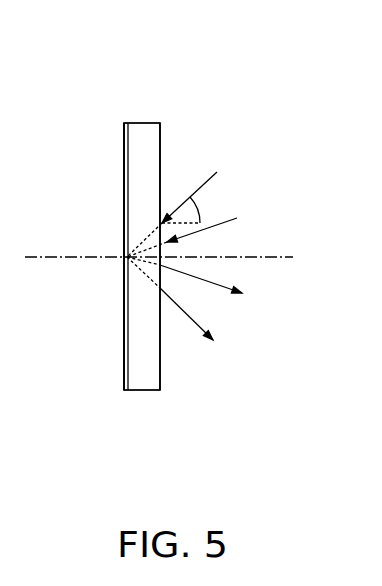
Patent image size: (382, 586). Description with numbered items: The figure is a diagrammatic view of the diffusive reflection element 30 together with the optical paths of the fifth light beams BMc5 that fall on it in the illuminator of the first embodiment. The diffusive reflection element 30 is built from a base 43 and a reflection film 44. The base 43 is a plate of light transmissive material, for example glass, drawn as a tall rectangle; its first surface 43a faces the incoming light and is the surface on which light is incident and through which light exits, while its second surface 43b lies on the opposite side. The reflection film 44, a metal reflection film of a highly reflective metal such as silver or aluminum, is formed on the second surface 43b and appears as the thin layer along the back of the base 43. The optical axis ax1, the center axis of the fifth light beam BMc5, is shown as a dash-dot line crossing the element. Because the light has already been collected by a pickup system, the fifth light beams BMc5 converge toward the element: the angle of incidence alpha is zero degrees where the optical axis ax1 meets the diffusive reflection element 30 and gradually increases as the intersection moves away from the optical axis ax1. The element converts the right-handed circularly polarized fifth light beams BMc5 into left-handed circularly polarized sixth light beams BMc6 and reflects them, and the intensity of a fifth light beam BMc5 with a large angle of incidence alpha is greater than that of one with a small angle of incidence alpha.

The diffusive reflection element 30 is at (105, 88).
The base 43 is at (143, 130).
The reflection film 44 is at (123, 147).
The first surface 43a is at (162, 382).
The second surface 43b is at (123, 380).
The fifth light beams BMc5 is at (201, 186).
The sixth light beams BMc6 is at (217, 292).
The angle of incidence alpha is at (203, 209).
The optical axis ax1 is at (260, 257).